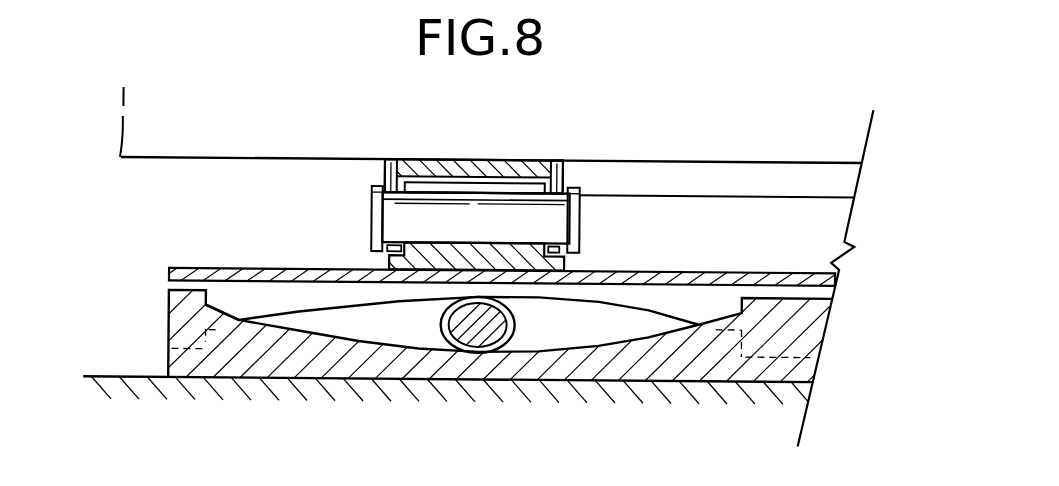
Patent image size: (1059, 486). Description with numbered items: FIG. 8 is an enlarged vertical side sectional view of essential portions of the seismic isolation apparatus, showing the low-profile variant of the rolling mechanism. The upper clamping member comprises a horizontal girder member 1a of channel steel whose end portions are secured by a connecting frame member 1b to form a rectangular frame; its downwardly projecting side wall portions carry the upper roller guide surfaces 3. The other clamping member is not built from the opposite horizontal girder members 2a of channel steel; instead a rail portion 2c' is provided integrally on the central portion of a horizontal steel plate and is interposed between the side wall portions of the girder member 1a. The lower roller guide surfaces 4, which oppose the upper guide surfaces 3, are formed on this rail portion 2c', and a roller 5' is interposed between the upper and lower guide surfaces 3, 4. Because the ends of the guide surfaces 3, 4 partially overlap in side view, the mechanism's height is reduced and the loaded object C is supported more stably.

The loaded object C is at (147, 122).
The horizontal girder member 1a is at (497, 162).
The connecting frame member 1b is at (712, 174).
The horizontal girder member 2a is at (403, 260).
The rail portion 2c' is at (482, 322).
The roller guide surface 3 is at (393, 157).
The roller guide surface 4 is at (530, 239).
The roller 5' is at (512, 323).